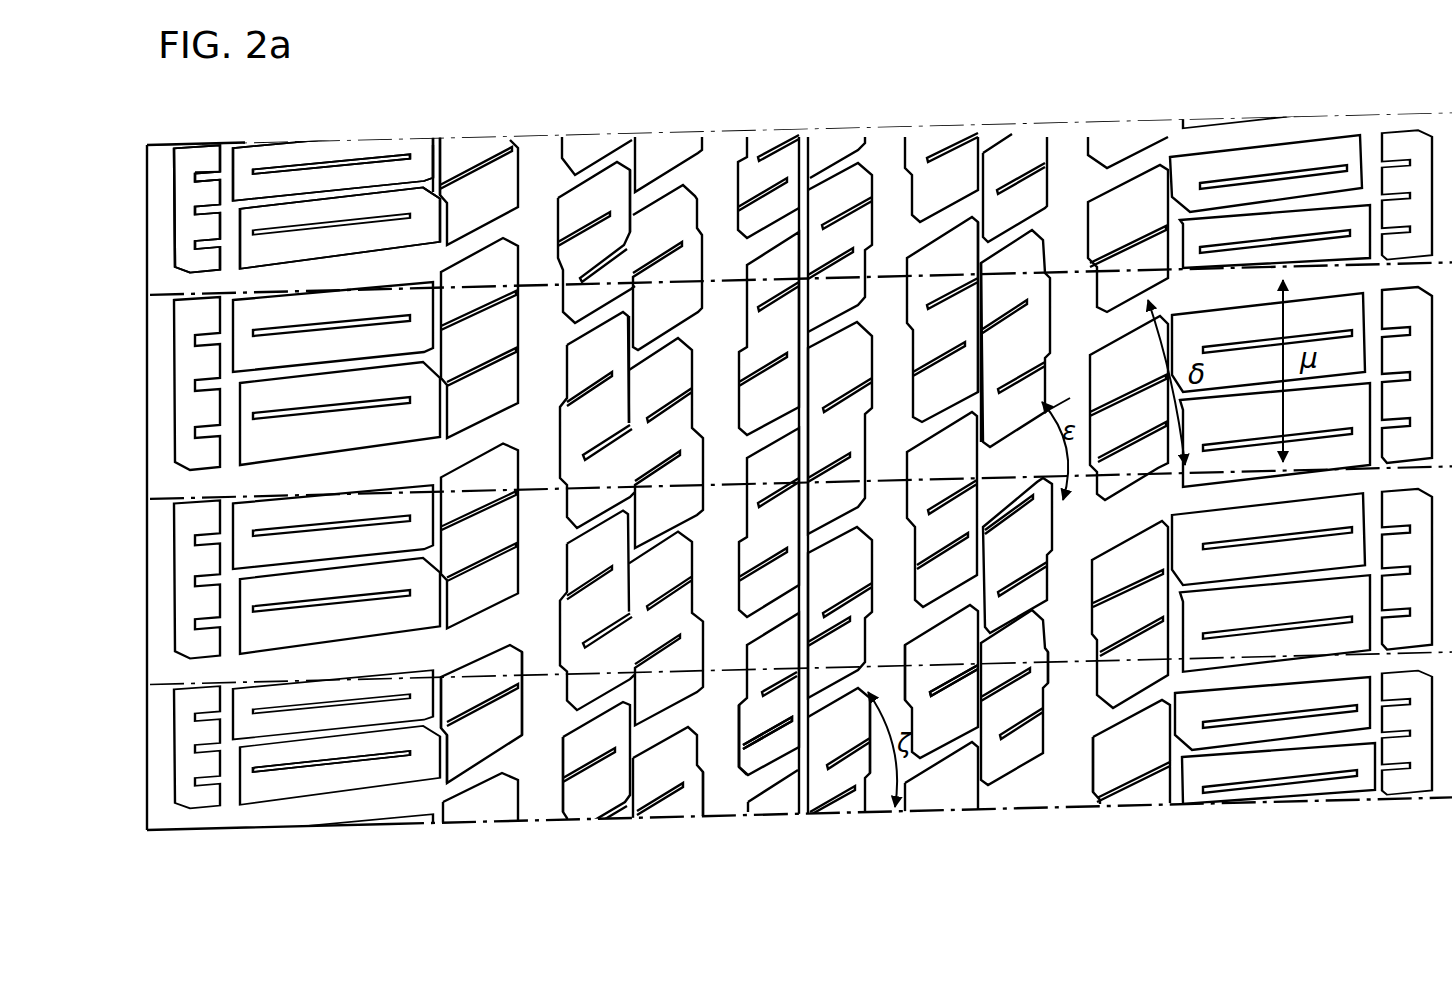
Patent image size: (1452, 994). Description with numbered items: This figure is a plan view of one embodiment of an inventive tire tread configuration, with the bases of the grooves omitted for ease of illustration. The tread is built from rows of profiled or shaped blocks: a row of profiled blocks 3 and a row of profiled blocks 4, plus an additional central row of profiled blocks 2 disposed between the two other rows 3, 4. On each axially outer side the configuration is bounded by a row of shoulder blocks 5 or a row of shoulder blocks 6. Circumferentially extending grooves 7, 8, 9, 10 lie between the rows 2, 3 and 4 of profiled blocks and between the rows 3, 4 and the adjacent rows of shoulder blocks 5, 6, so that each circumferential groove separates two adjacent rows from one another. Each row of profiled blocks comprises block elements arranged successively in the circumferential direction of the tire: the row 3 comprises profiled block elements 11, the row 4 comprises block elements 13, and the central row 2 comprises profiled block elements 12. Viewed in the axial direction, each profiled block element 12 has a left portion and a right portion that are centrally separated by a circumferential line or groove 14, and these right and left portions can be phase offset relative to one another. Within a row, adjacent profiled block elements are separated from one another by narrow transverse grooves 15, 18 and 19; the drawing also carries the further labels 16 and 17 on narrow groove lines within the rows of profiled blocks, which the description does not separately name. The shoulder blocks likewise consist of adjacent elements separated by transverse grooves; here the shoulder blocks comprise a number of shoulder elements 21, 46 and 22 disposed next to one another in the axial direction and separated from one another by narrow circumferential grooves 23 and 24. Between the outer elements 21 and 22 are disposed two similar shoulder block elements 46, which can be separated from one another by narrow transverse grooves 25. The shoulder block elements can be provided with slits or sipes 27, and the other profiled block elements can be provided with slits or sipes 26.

The central row of profiled blocks 2 is at (842, 812).
The row of profiled blocks 3 is at (680, 812).
The row of profiled blocks 4 is at (1005, 813).
The row of shoulder blocks 5 is at (418, 826).
The row of shoulder blocks 6 is at (1270, 797).
The circumferential groove 7 is at (543, 808).
The circumferential groove 8 is at (728, 806).
The circumferential groove 9 is at (880, 803).
The circumferential groove 10 is at (1067, 790).
The profiled block element 11 is at (607, 242).
The profiled block element 12 is at (770, 160).
The block element 13 is at (940, 166).
The circumferential line or groove 14 is at (804, 160).
The narrow transverse groove 15 is at (666, 188).
The narrow circumferential groove 16 is at (632, 162).
The narrow circumferential groove 17 is at (980, 165).
The narrow transverse groove 18 is at (833, 167).
The narrow transverse groove 19 is at (1016, 232).
The shoulder element 21 is at (482, 150).
The shoulder element 22 is at (190, 160).
The narrow circumferential groove 23 is at (237, 152).
The narrow circumferential groove 24 is at (434, 168).
The narrow transverse groove 25 is at (315, 196).
The slit or sipe 26 is at (770, 737).
The slit or sipe 27 is at (326, 775).
The shoulder block element 46 is at (365, 178).